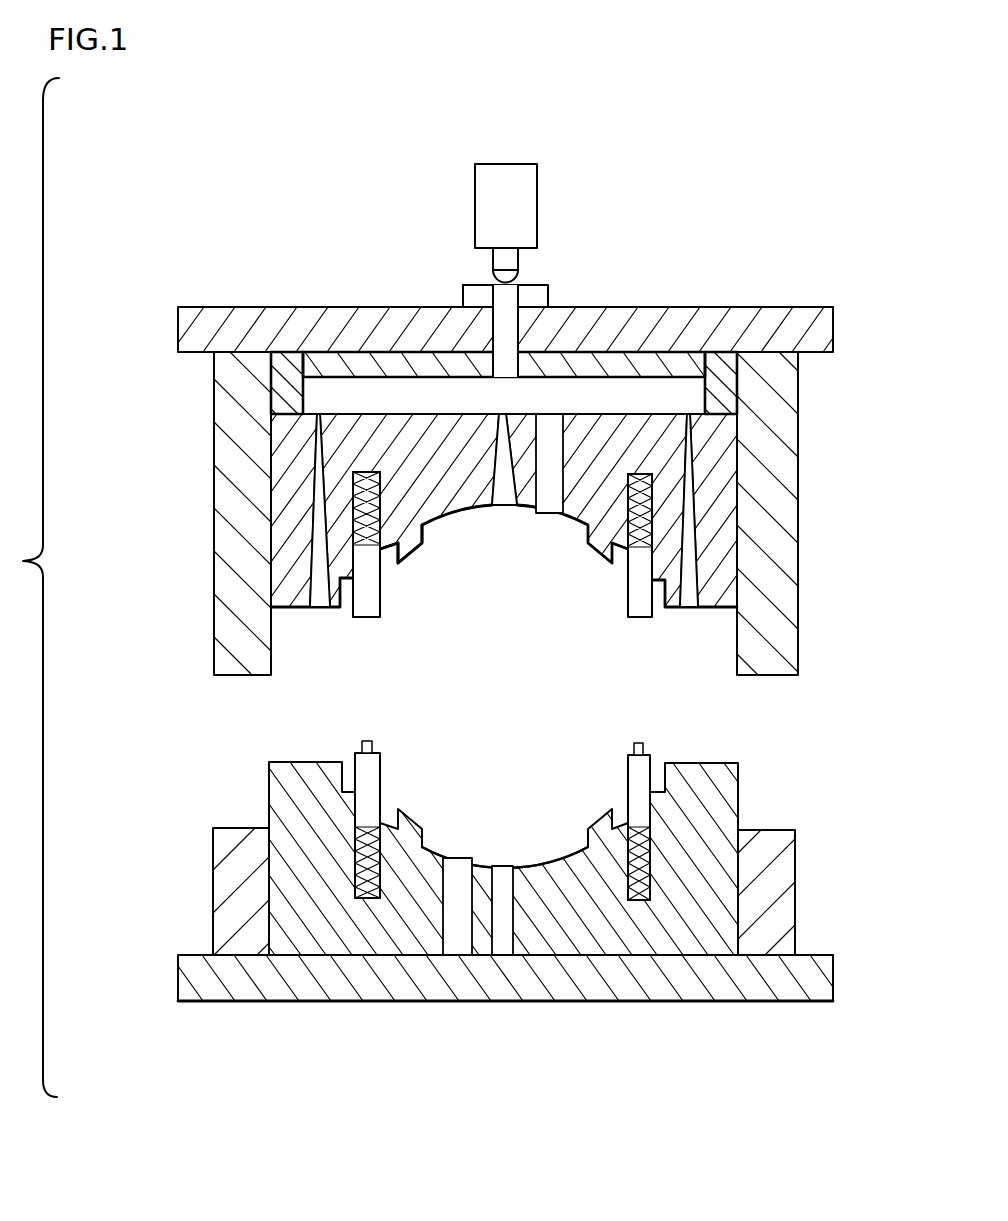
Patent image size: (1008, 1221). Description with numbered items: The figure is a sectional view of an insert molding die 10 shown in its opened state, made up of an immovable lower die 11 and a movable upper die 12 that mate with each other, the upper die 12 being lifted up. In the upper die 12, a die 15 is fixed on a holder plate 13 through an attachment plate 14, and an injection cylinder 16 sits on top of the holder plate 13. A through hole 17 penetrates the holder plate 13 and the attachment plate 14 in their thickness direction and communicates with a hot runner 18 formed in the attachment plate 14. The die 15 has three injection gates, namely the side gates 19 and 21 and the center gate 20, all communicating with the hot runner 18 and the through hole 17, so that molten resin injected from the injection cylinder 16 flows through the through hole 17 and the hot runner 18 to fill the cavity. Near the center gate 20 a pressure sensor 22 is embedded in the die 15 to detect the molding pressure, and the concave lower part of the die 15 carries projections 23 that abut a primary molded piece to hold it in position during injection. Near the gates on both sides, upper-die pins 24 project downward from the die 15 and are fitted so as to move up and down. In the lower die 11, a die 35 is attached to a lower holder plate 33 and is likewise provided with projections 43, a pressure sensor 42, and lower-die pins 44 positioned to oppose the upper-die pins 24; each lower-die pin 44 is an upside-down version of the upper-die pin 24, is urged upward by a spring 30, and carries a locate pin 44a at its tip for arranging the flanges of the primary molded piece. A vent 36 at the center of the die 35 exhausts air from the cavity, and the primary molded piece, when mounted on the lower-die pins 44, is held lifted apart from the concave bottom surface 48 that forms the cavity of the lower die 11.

The insert molding die 10 is at (176, 732).
The lower die 11 is at (198, 869).
The upper die 12 is at (200, 458).
The holder plate 13 is at (246, 322).
The attachment plate 14 is at (280, 382).
The die 15 is at (283, 533).
The injection cylinder 16 is at (509, 177).
The through hole 17 is at (508, 327).
The hot runner 18 is at (340, 378).
The injection gate 19 is at (317, 597).
The center gate 20 is at (508, 492).
The injection gate 21 is at (690, 597).
The pressure sensor 22 is at (551, 505).
The projections 23 is at (413, 555).
The upper-die pins 24 is at (367, 607).
The springs 30 is at (665, 480).
The lower holder plate 33 is at (255, 987).
The die 35 is at (285, 794).
The vent 36 is at (507, 937).
The pressure sensor 42 is at (458, 937).
The projections 43 is at (415, 820).
The lower-die pins 44 is at (640, 788).
The locate pin 44a is at (640, 744).
The concave bottom surface 48 is at (550, 865).